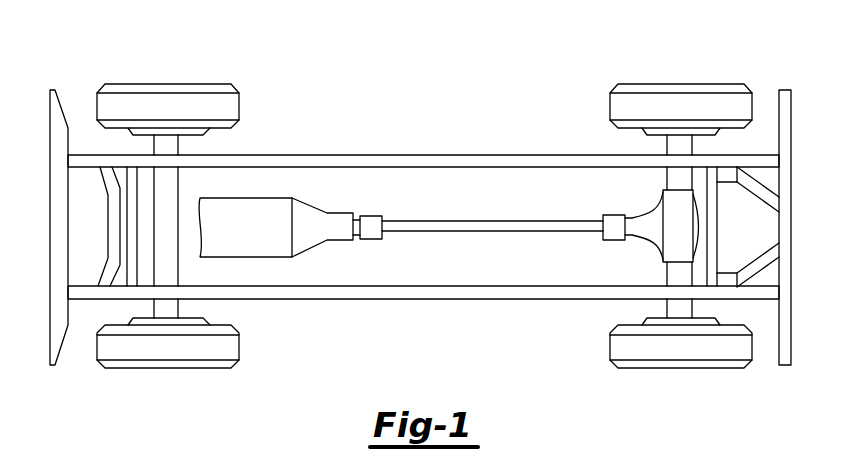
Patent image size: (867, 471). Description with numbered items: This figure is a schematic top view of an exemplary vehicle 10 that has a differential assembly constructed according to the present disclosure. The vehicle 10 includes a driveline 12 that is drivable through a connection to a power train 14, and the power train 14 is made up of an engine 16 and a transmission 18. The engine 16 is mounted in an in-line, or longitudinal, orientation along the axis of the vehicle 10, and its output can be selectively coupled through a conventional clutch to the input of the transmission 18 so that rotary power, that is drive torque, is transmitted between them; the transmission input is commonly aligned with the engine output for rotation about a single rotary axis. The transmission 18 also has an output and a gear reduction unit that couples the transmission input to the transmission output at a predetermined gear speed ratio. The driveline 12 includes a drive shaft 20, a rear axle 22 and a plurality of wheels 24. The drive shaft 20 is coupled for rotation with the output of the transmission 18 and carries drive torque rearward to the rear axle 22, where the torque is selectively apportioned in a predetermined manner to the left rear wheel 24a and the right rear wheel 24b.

The vehicle 10 is at (377, 108).
The driveline 12 is at (631, 199).
The power train 14 is at (290, 229).
The engine 16 is at (250, 238).
The transmission 18 is at (305, 217).
The drive shaft 20 is at (481, 227).
The rear axle 22 is at (655, 252).
The wheels 24 is at (160, 382).
The left rear wheel 24a is at (680, 350).
The right rear wheel 24b is at (680, 105).